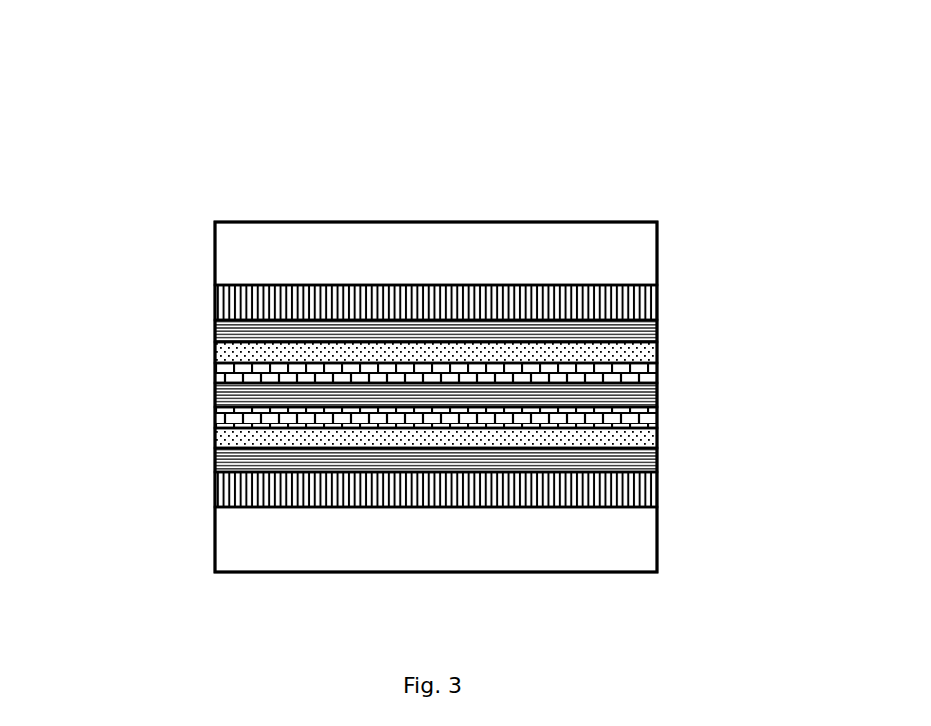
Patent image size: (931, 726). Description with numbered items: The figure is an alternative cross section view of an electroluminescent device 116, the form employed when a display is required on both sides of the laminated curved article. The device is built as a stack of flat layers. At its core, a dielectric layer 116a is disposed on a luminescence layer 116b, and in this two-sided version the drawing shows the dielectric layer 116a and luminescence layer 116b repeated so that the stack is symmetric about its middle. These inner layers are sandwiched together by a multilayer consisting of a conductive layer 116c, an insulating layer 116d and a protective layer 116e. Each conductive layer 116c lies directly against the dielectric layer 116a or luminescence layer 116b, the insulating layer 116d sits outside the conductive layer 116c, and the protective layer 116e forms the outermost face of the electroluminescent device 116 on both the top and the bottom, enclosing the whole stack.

The electroluminescent device 116 is at (447, 193).
The dielectric layer 116a is at (657, 415).
The luminescence layer 116b is at (215, 353).
The conductive layer 116c is at (215, 462).
The insulating layer 116d is at (215, 303).
The protective layer 116e is at (215, 552).